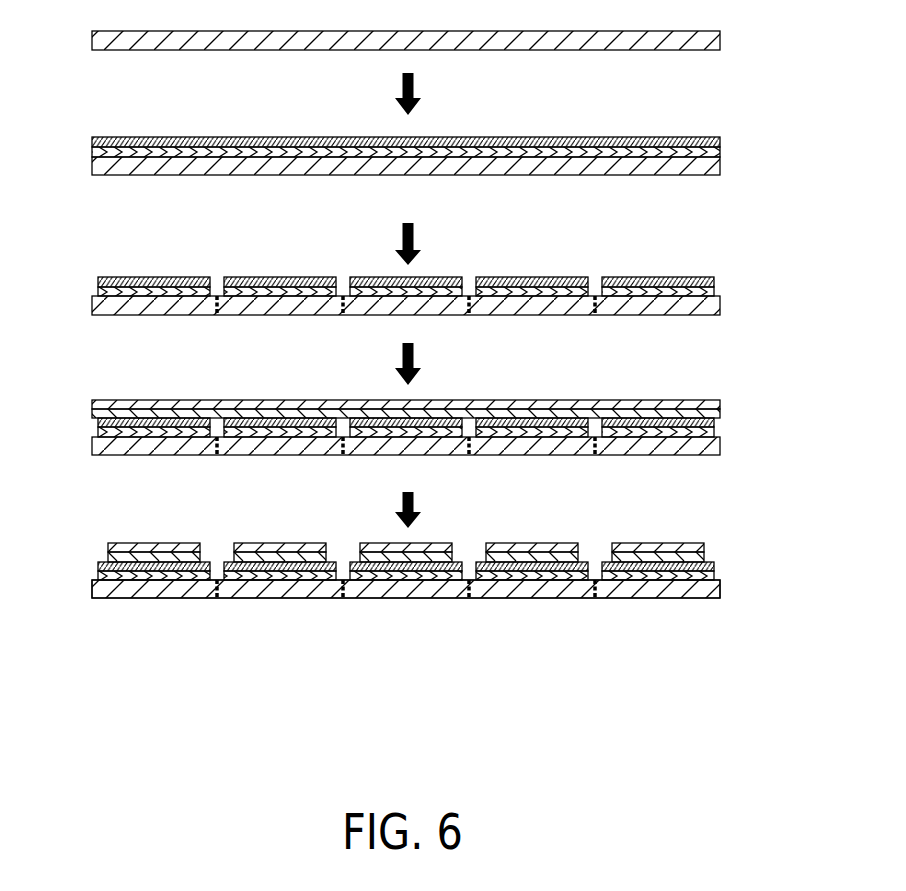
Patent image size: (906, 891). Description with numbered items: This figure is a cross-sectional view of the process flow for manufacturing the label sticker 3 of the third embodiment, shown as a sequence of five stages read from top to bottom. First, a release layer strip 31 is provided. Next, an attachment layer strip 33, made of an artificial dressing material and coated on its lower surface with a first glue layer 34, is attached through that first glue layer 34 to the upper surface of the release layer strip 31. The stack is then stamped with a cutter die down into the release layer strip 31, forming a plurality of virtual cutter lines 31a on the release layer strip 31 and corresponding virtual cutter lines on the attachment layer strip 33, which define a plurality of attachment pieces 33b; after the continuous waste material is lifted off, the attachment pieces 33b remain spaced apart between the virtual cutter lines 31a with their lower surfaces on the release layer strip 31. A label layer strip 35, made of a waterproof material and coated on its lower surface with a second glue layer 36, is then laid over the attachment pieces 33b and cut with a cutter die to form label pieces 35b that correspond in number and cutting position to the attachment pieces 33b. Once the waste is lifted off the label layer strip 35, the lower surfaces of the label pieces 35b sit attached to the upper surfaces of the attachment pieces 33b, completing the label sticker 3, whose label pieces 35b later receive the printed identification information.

The label sticker 3 is at (107, 533).
The release layer strip 31 is at (718, 39).
The virtual cutter lines 31a is at (600, 303).
The attachment layer strip 33 is at (720, 138).
The attachment pieces 33b is at (715, 282).
The first glue layer 34 is at (720, 150).
The label layer strip 35 is at (92, 402).
The label pieces 35b is at (108, 545).
The second glue layer 36 is at (95, 418).